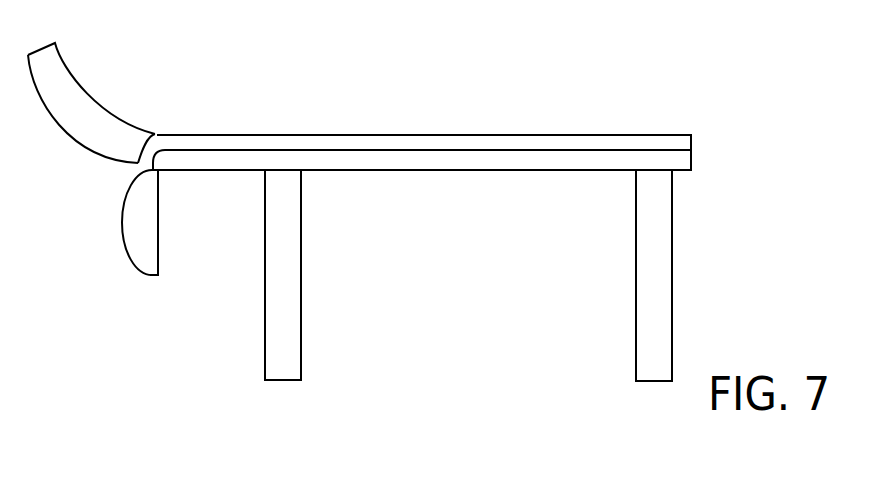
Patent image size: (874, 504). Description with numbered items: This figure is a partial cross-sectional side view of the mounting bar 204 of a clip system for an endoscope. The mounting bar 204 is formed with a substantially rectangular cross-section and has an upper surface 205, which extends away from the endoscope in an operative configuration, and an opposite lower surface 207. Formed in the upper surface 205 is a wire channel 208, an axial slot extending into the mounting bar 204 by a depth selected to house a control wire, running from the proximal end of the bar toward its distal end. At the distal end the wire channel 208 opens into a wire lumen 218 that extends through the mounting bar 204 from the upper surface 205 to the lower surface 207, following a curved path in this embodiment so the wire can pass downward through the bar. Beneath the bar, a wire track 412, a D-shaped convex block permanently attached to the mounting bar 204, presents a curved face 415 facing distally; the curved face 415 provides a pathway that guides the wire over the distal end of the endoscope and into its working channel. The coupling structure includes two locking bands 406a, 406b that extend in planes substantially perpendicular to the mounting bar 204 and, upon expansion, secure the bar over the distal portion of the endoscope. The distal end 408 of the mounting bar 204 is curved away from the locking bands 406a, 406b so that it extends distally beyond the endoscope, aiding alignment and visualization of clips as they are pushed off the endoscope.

The mounting bar 204 is at (490, 135).
The upper surface 205 is at (329, 135).
The lower surface 207 is at (332, 171).
The wire channel 208 is at (199, 141).
The wire lumen 218 is at (153, 134).
The distal end 408 is at (57, 44).
The curved face 415 is at (122, 216).
The wire track 412 is at (131, 256).
The locking band 406a is at (282, 353).
The locking band 406b is at (653, 365).